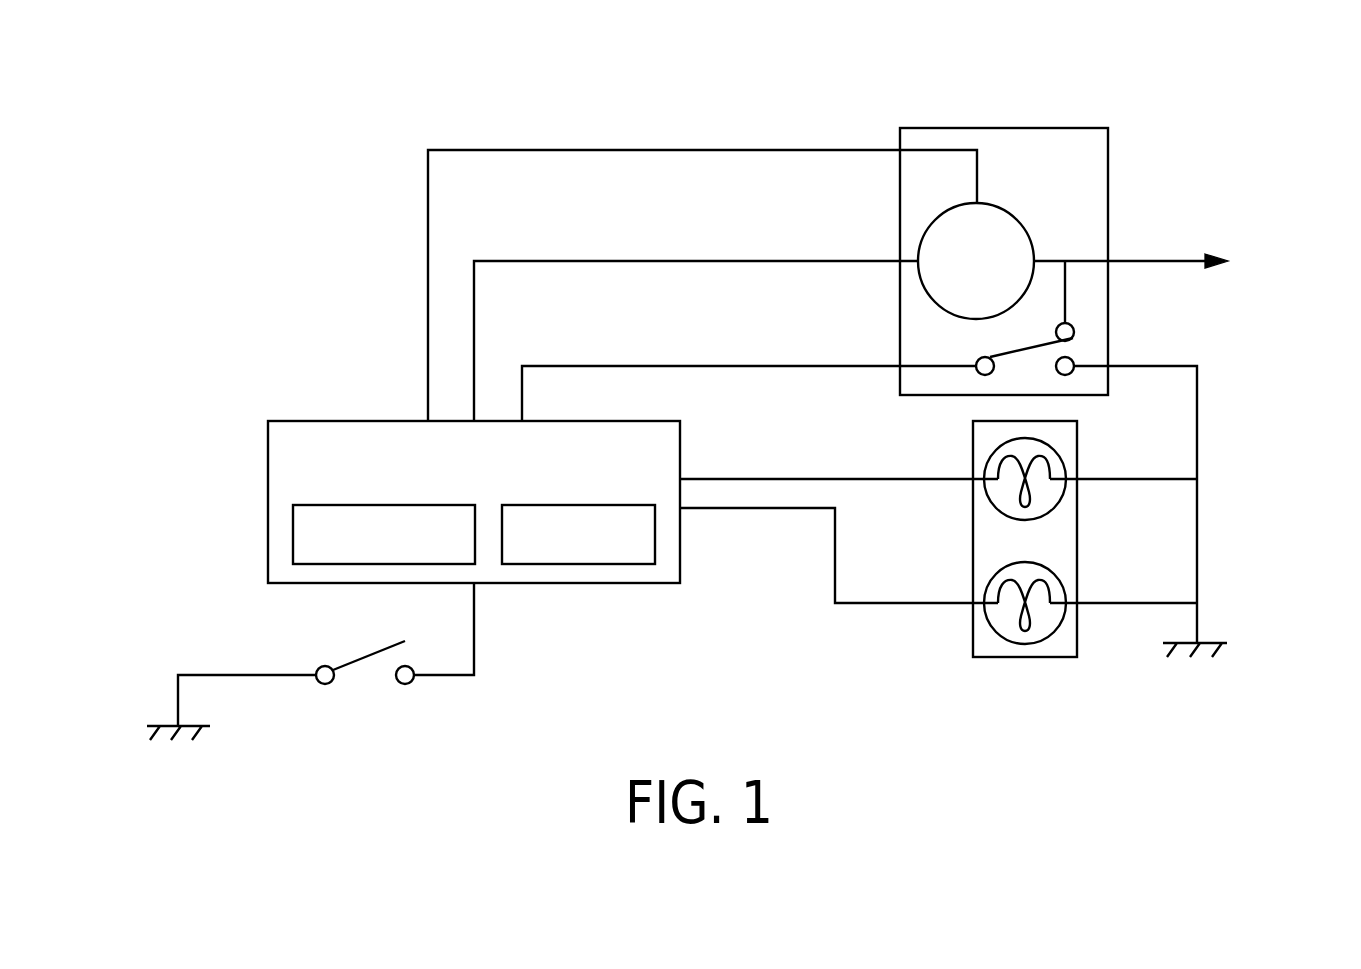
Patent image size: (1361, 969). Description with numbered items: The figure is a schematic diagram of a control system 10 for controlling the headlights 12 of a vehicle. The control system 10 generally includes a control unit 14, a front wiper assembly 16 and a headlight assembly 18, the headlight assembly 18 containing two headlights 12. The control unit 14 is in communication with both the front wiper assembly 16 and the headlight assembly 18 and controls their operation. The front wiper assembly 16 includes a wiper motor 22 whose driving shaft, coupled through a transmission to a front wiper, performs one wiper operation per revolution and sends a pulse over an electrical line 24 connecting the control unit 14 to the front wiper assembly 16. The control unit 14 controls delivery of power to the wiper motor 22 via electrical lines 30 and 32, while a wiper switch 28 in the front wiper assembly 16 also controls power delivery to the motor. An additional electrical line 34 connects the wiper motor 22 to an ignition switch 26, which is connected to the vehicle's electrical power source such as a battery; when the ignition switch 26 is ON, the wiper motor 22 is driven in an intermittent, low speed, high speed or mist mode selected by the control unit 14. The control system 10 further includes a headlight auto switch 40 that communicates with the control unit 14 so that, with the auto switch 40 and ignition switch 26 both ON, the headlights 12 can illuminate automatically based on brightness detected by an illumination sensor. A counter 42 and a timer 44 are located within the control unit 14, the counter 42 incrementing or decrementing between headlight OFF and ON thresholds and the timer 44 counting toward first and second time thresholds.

The control system 10 is at (993, 68).
The headlights 12 is at (1043, 517).
The control unit 14 is at (293, 420).
The front wiper assembly 16 is at (1108, 128).
The headlight assembly 18 is at (1057, 657).
The wiper motor 22 is at (1008, 207).
The electrical line 24 is at (648, 150).
The ignition switch 26 is at (1260, 240).
The wiper switch 28 is at (1023, 352).
The electrical line 30 is at (665, 260).
The electrical line 32 is at (680, 364).
The electrical line 34 is at (1148, 261).
The headlight auto switch 40 is at (362, 655).
The counter 42 is at (333, 505).
The timer 44 is at (620, 505).